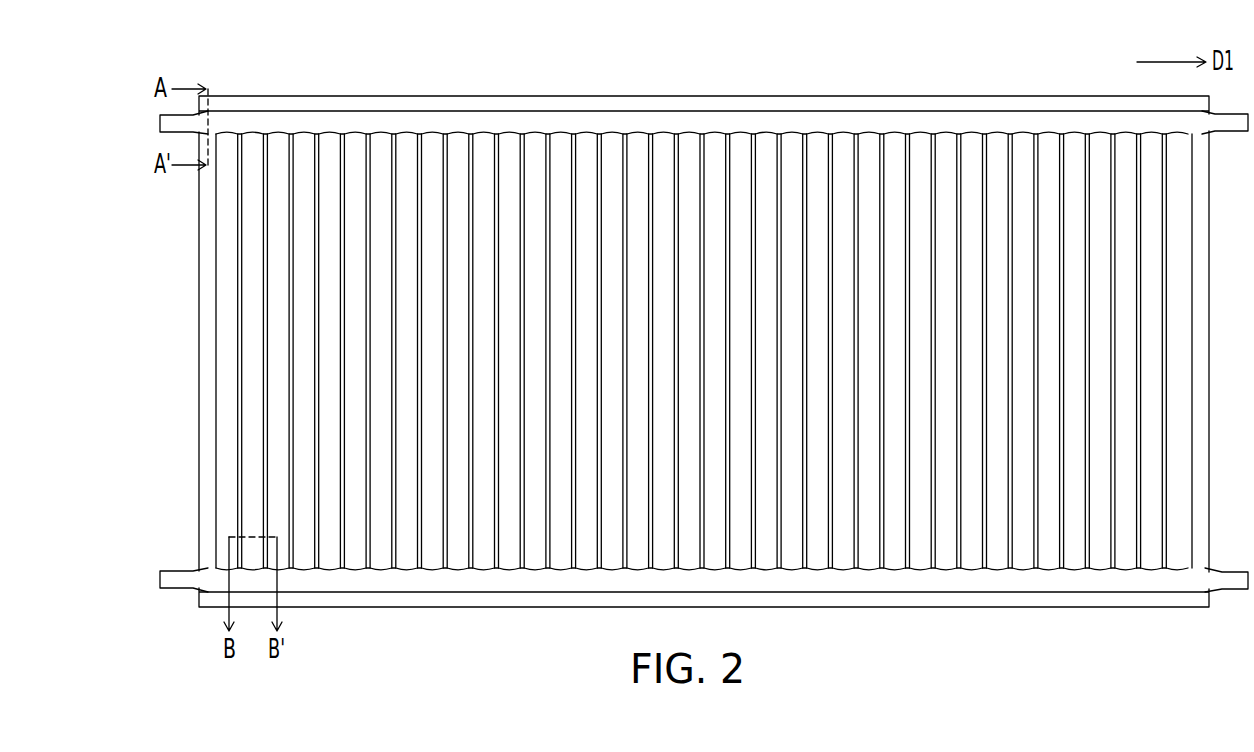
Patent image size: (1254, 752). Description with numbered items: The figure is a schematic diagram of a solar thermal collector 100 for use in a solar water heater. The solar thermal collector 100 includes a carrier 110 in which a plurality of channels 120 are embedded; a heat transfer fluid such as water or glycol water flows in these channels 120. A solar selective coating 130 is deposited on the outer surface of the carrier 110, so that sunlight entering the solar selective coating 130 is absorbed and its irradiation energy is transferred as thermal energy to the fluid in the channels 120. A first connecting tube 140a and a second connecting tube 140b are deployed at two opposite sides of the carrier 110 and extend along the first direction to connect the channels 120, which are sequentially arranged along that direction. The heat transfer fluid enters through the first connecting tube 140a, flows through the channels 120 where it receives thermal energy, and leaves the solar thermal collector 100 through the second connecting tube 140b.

The solar thermal collector 100 is at (704, 352).
The carrier 110 is at (802, 107).
The channels 120 is at (535, 182).
The solar selective coating 130 is at (709, 181).
The first connecting tube 140a is at (405, 123).
The second connecting tube 140b is at (355, 580).